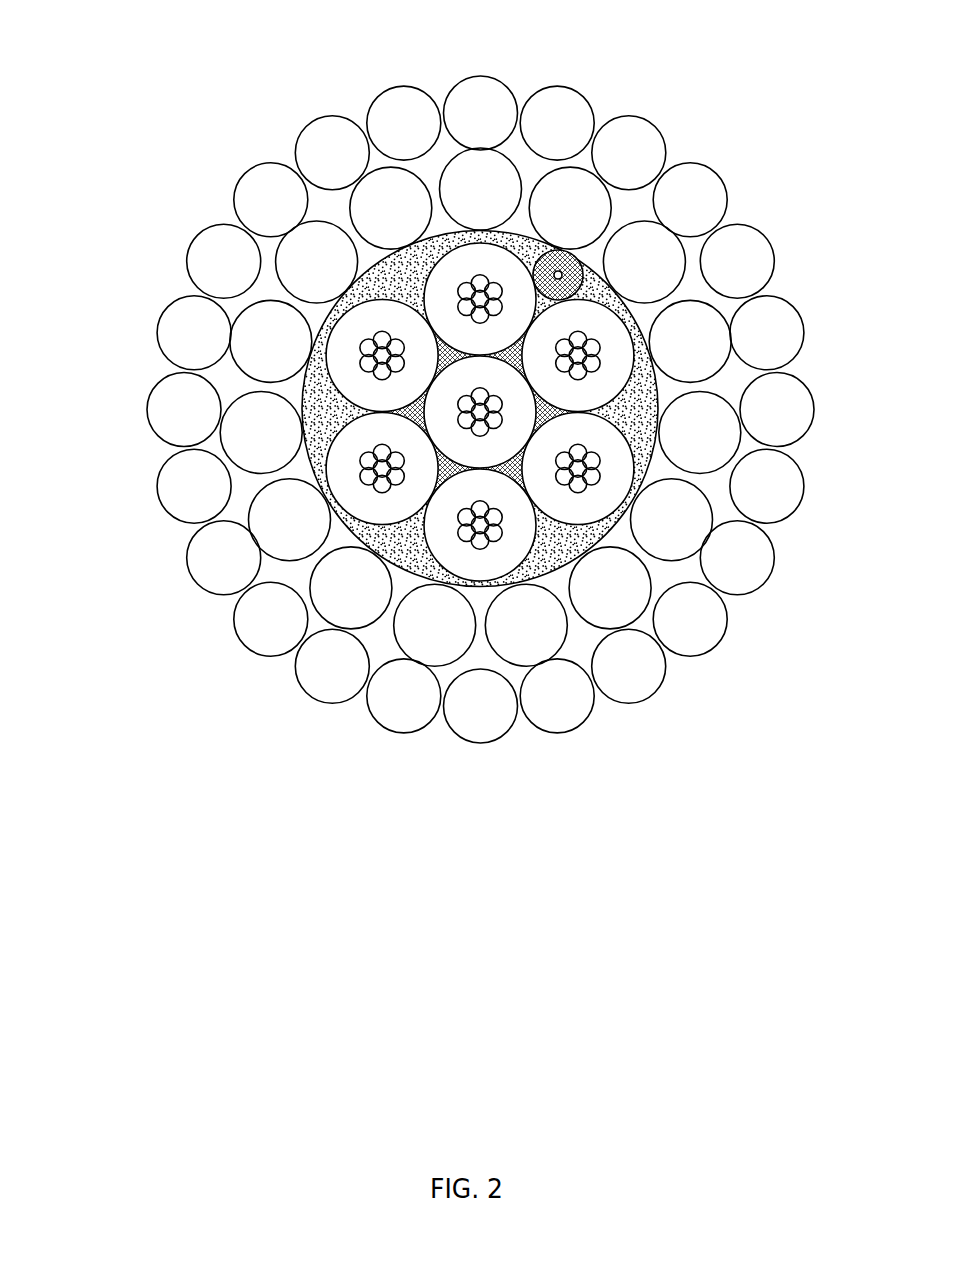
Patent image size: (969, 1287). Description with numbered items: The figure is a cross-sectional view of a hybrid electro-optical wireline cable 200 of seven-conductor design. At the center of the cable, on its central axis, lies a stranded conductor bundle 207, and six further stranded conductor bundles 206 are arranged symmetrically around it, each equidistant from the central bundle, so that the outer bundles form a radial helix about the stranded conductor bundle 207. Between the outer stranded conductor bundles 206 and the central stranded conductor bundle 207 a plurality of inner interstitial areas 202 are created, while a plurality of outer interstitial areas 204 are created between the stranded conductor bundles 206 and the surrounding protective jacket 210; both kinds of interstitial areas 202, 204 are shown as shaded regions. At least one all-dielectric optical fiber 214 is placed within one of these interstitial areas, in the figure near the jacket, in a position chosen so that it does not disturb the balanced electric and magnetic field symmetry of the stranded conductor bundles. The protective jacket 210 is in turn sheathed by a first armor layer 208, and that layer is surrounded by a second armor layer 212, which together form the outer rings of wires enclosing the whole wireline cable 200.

The wireline cable 200 is at (463, 390).
The inner interstitial areas 202 is at (507, 473).
The outer interstitial areas 204 is at (640, 411).
The stranded conductor bundles 206 is at (475, 263).
The stranded conductor bundle 207 is at (510, 417).
The first armor layer 208 is at (247, 433).
The protective jacket 210 is at (520, 235).
The second armor layer 212 is at (183, 483).
The all-dielectric optical fiber 214 is at (607, 268).